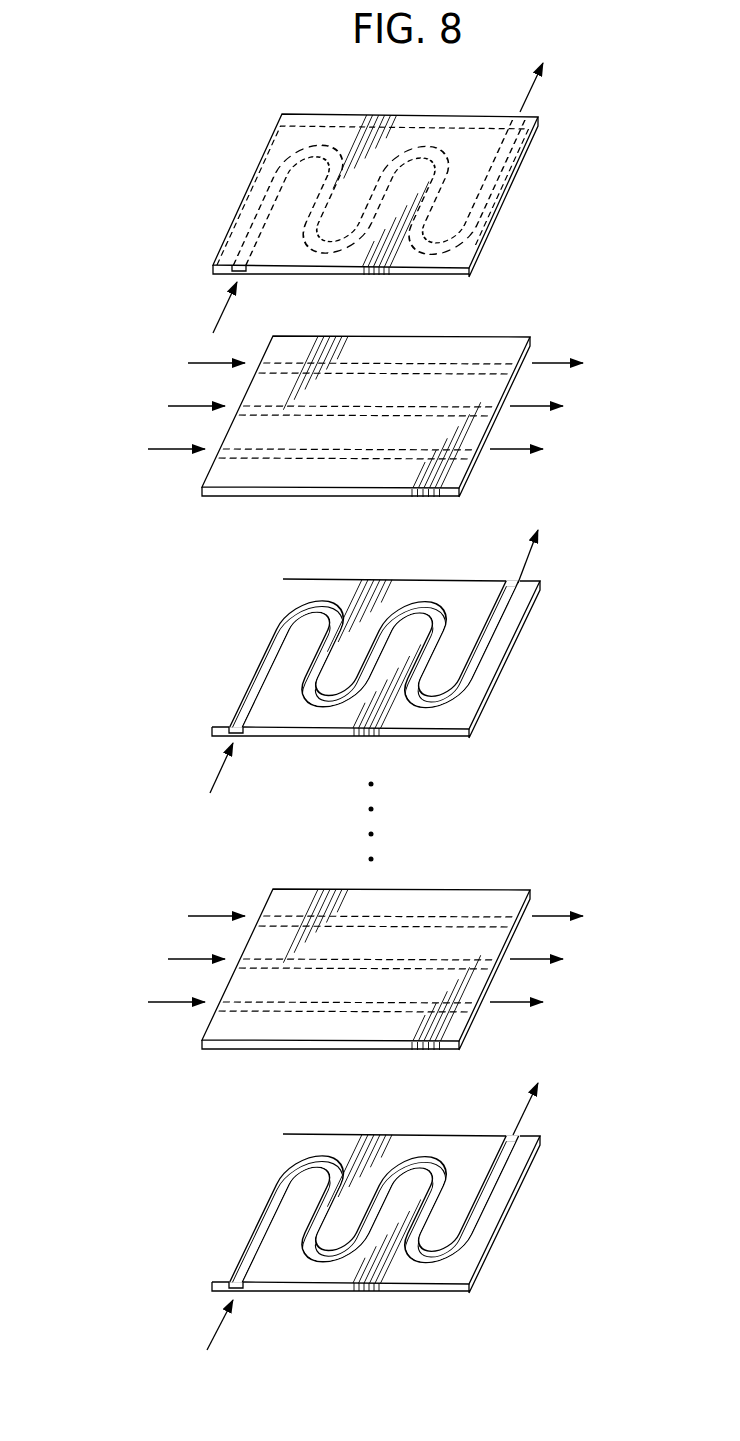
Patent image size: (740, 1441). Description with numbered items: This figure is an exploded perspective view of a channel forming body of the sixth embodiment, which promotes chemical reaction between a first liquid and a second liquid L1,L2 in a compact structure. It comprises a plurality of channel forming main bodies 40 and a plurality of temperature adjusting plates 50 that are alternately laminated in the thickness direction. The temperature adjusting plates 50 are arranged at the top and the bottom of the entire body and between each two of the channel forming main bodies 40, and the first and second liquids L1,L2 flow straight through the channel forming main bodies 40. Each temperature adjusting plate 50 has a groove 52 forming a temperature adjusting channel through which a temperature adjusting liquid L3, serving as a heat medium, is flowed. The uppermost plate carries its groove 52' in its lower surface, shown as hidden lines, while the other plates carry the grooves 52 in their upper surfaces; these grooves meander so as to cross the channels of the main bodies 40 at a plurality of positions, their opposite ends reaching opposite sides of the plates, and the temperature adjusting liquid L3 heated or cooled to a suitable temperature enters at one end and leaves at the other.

The channel forming main body 40 is at (213, 505).
The temperature adjusting plate 50 is at (397, 703).
The groove 52 is at (350, 934).
The groove 52' is at (410, 190).
The first liquid and second liquid L1,L2 is at (150, 449).
The temperature adjusting liquid L3 is at (225, 310).